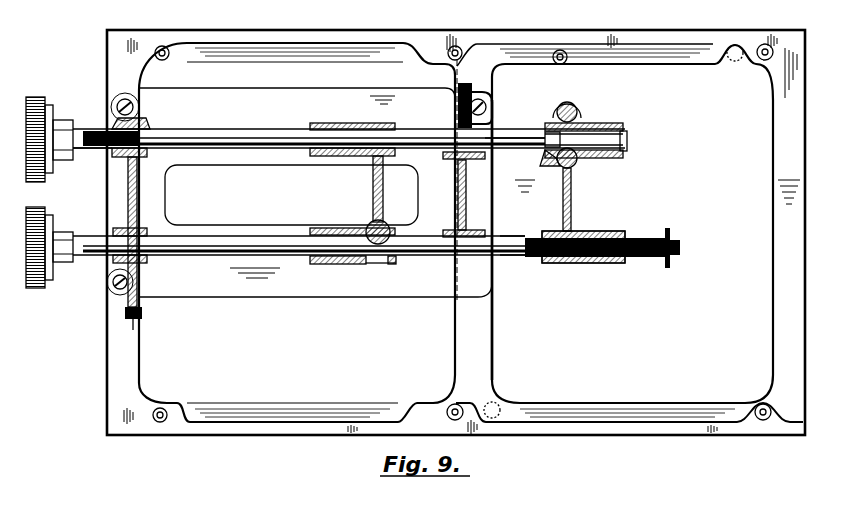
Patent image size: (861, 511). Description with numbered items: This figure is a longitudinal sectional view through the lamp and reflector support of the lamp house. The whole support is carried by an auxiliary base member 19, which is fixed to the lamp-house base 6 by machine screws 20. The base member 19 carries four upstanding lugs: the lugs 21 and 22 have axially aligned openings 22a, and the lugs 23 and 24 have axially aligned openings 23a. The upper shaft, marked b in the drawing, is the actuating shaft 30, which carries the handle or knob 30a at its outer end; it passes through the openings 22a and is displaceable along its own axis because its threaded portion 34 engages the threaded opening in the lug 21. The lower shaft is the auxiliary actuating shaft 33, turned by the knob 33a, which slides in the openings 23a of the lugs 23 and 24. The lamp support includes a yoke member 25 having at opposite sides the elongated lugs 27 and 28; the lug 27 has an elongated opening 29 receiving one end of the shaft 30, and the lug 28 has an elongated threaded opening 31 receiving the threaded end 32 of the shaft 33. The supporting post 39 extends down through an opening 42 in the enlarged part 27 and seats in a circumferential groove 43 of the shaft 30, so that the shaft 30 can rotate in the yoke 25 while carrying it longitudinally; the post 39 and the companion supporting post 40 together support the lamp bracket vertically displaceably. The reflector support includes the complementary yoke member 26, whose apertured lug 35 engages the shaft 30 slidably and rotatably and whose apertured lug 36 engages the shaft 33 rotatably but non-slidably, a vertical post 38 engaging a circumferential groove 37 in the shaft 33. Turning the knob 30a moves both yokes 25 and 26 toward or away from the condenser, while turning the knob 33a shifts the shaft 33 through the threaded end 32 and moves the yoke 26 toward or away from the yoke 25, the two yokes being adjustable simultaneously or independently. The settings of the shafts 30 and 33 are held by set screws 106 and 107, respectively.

The base 6 is at (355, 42).
The auxiliary base member 19 is at (327, 299).
The set screw 106 is at (468, 84).
The upper adjusting shaft b is at (240, 130).
The knob 30a is at (34, 97).
The threaded portion 34 is at (97, 152).
The machine screws 20 is at (115, 100).
The upstanding lug 21 is at (152, 122).
The axially aligned openings 22a is at (122, 170).
The set screw 107 is at (140, 318).
The upstanding lug 23 is at (150, 236).
The axially aligned openings 23a is at (145, 243).
The knob 33a is at (36, 288).
The apertured lug 35 is at (345, 125).
The yoke member 26 is at (372, 188).
The vertical post 38 is at (383, 222).
The apertured lug 36 is at (360, 264).
The circumferential groove 37 is at (405, 264).
The upstanding lug 22 is at (497, 115).
The actuating shaft 30 is at (500, 158).
The upstanding lug 24 is at (494, 228).
The supporting post 40 is at (572, 103).
The elongated lug 27 is at (592, 124).
The elongated opening 29 is at (627, 140).
The circumferential groove 43 is at (548, 134).
The supporting post 39 is at (550, 166).
The opening 42 is at (576, 163).
The yoke member 25 is at (573, 192).
The auxiliary actuating shaft 33 is at (508, 258).
The elongated threaded opening 31 is at (587, 265).
The elongated lug 28 is at (620, 232).
The threaded end 32 is at (662, 264).